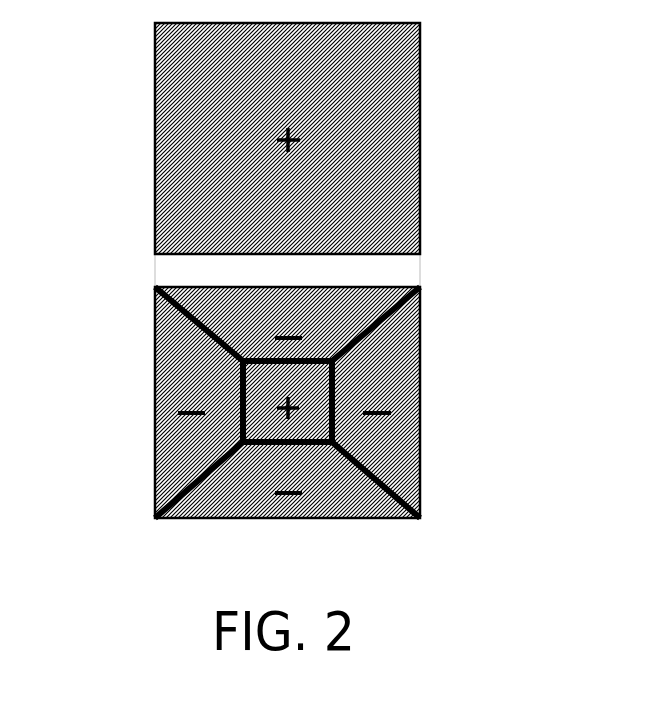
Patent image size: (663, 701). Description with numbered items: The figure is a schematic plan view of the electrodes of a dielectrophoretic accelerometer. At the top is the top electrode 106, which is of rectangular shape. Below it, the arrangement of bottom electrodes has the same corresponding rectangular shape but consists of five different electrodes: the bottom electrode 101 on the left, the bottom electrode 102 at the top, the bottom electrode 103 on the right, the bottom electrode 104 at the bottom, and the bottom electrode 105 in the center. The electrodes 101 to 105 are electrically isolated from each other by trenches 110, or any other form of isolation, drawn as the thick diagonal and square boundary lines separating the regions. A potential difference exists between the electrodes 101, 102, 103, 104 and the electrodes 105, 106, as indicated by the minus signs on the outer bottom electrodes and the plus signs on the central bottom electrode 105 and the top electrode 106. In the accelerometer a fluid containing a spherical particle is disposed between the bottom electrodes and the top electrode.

The bottom electrode 101 is at (160, 390).
The bottom electrode 102 is at (213, 305).
The bottom electrode 103 is at (412, 332).
The bottom electrode 104 is at (347, 502).
The bottom electrode 105 is at (252, 423).
The top electrode 106 is at (385, 201).
The trenches 110 is at (385, 483).